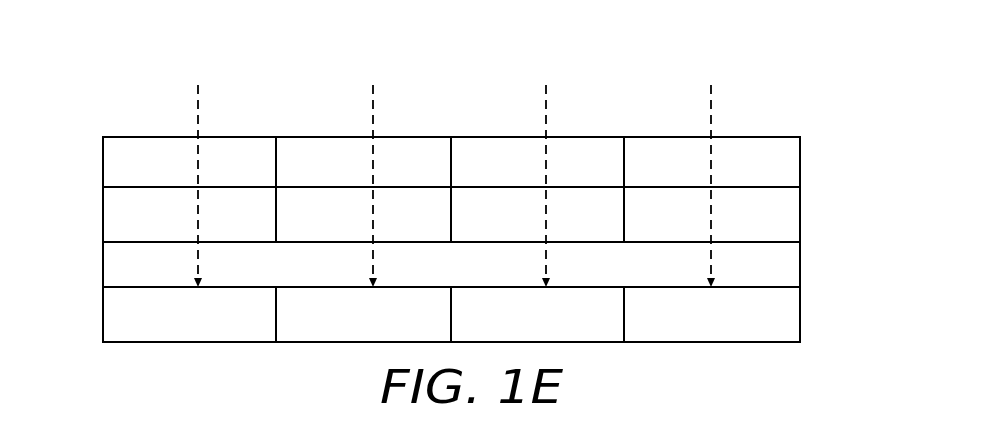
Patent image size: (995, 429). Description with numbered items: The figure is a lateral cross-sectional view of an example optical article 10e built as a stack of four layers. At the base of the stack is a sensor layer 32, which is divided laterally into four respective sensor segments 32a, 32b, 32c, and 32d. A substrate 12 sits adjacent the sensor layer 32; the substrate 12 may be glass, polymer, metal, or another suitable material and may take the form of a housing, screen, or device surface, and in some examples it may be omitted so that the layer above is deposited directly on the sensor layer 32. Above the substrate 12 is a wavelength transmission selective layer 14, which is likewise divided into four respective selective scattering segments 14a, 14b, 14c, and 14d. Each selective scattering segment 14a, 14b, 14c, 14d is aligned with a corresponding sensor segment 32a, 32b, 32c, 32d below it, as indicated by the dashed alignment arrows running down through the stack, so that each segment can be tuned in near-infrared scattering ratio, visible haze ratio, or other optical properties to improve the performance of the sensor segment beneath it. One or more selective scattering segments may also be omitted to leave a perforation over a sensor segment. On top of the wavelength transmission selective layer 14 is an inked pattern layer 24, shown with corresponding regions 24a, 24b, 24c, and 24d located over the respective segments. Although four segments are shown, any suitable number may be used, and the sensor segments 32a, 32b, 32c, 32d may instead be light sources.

The article 10e is at (119, 86).
The inked pattern layer 24 is at (800, 157).
The first top layer segment 24a is at (225, 135).
The second top layer segment 24b is at (408, 135).
The third top layer segment 24c is at (587, 135).
The fourth top layer segment 24d is at (737, 135).
The wavelength transmission selective layer 14 is at (800, 212).
The selective scattering segment 14a is at (167, 226).
The selective scattering segment 14b is at (354, 226).
The selective scattering segment 14c is at (522, 226).
The selective scattering segment 14d is at (681, 226).
The substrate 12 is at (800, 267).
The sensor layer 32 is at (800, 312).
The sensor segment 32a is at (218, 326).
The sensor segment 32b is at (405, 326).
The sensor segment 32c is at (574, 326).
The sensor segment 32d is at (733, 326).